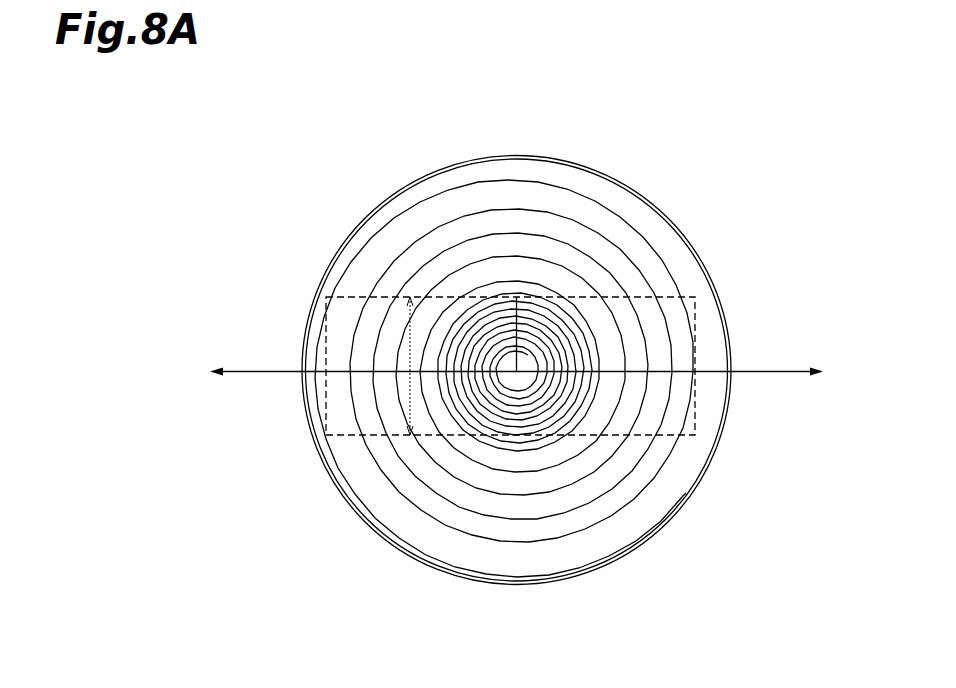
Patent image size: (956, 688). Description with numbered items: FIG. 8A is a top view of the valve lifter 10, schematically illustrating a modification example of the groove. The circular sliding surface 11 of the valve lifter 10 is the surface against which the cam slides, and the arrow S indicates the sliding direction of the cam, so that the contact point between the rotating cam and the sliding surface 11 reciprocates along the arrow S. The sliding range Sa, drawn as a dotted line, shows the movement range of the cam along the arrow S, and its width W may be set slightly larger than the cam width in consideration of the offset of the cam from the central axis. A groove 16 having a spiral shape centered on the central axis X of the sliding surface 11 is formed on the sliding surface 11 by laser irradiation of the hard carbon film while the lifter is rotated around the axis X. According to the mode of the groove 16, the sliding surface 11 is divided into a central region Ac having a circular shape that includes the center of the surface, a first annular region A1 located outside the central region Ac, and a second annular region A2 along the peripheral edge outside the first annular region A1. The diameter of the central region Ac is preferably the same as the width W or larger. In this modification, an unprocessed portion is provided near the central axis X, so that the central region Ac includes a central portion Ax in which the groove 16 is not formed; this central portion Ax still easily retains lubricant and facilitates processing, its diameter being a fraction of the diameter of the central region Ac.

The valve lifter 10 is at (668, 93).
The sliding surface 11 is at (468, 210).
The groove 16 is at (510, 520).
The first annular region A1 is at (568, 262).
The second annular region A2 is at (560, 172).
The central region Ac is at (565, 336).
The central portion Ax is at (512, 358).
The width W is at (407, 337).
The arrow S is at (780, 371).
The sliding range Sa is at (653, 438).
The central axis X is at (516, 372).